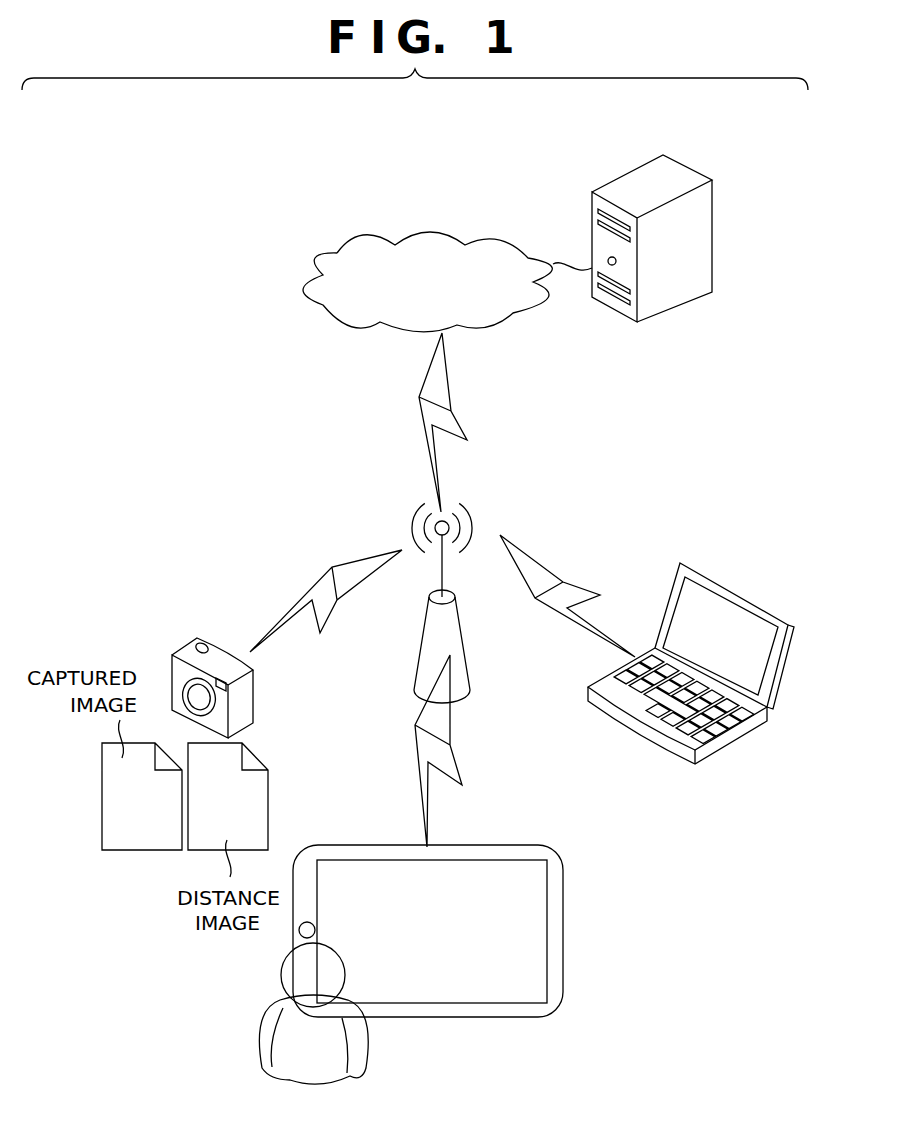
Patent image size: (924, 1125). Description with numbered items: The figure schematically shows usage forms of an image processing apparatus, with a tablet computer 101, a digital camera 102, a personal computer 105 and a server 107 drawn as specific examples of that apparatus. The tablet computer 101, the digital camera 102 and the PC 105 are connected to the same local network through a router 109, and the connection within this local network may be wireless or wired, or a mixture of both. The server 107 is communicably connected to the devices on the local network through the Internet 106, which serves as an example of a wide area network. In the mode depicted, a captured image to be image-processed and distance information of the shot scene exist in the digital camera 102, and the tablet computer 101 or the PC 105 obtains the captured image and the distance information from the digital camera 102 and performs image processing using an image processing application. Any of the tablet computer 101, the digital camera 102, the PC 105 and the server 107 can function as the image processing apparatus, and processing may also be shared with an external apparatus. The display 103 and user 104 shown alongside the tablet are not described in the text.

The tablet computer 101 is at (467, 931).
The digital camera 102 is at (258, 697).
The display 103 is at (547, 963).
The user 104 is at (258, 1032).
The personal computer 105 is at (733, 588).
The Internet 106 is at (428, 232).
The server 107 is at (615, 177).
The router 109 is at (468, 663).